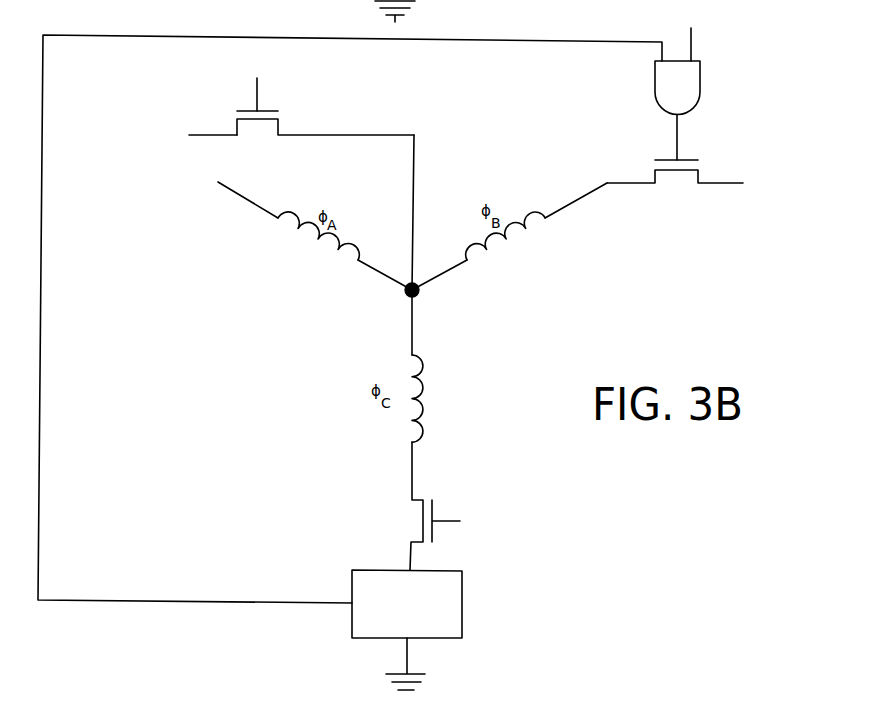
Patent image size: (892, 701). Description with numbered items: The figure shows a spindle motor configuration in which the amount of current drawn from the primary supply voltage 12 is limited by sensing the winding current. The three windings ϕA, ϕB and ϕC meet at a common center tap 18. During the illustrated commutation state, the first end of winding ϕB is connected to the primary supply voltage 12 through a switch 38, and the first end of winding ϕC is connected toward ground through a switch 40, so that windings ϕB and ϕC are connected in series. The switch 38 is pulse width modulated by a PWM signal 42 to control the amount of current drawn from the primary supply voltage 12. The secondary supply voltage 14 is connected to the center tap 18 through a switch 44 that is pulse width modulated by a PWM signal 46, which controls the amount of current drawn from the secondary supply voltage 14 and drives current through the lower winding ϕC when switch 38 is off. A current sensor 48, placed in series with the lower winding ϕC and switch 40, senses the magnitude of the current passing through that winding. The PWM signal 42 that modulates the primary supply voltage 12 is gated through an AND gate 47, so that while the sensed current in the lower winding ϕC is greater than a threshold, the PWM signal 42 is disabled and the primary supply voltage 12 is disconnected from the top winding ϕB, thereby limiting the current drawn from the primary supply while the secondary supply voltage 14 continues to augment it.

The primary supply voltage 12 is at (717, 185).
The secondary supply voltage 14 is at (190, 137).
The center tap 18 is at (434, 290).
The switch 38 is at (670, 196).
The switch 40 is at (432, 484).
The PWM signal 42 is at (676, 128).
The switch 44 is at (258, 142).
The PWM signal 46 is at (257, 92).
The AND gate 47 is at (655, 76).
The current sensor 48 is at (463, 605).